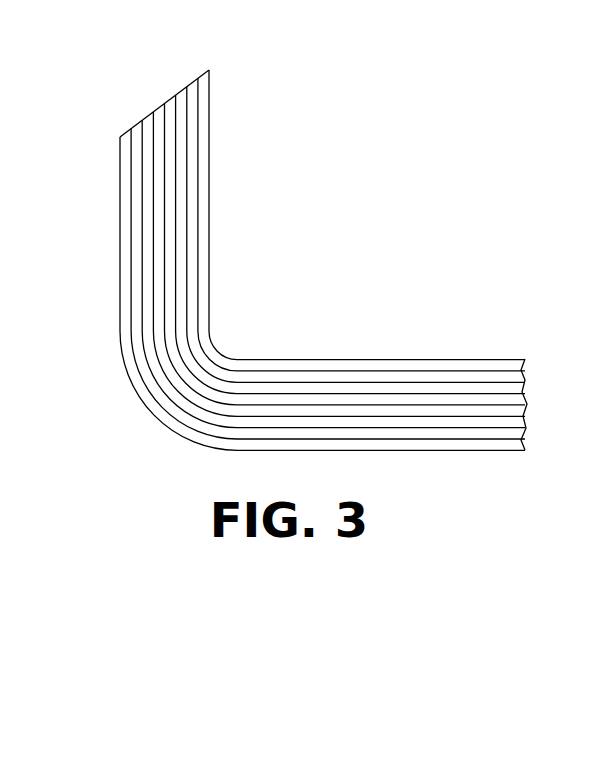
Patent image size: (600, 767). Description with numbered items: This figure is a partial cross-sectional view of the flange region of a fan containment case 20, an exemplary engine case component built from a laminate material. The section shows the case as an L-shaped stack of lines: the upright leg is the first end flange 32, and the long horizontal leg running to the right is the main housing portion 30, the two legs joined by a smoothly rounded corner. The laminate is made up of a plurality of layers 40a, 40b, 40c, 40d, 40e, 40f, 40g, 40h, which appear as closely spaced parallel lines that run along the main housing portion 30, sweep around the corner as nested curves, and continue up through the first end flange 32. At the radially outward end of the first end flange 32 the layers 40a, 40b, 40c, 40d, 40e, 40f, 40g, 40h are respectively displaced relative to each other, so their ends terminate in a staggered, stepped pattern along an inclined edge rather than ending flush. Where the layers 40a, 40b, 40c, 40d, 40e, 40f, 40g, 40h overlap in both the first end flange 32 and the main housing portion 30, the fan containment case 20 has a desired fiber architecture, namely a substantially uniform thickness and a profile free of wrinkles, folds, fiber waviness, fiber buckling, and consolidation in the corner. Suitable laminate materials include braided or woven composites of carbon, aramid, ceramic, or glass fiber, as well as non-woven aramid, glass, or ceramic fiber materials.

The fan containment case 20 is at (498, 148).
The main housing portion 30 is at (425, 358).
The first end flange 32 is at (209, 244).
The layer 40a is at (202, 72).
The layer 40b is at (186, 82).
The layer 40c is at (176, 90).
The layer 40d is at (169, 96).
The layer 40e is at (153, 116).
The layer 40f is at (143, 122).
The layer 40g is at (132, 131).
The layer 40h is at (122, 138).